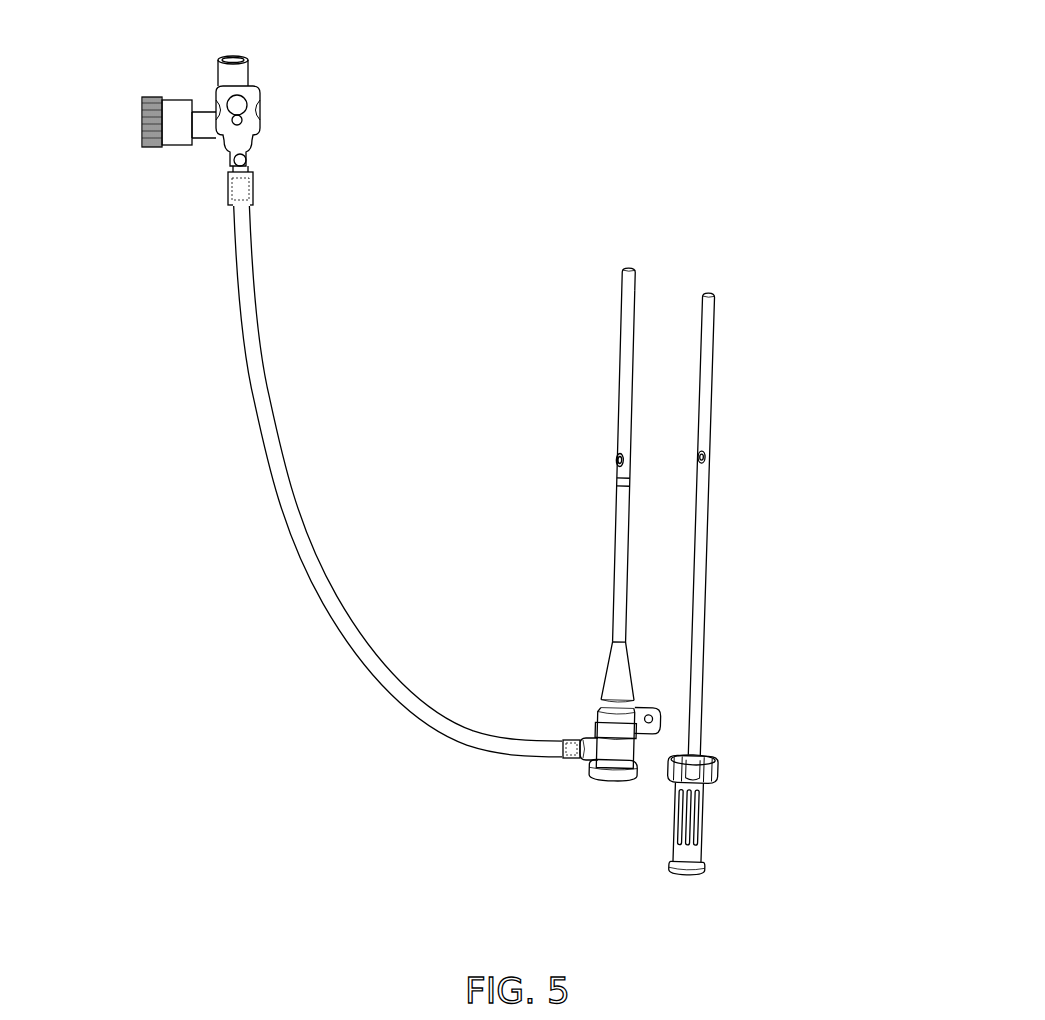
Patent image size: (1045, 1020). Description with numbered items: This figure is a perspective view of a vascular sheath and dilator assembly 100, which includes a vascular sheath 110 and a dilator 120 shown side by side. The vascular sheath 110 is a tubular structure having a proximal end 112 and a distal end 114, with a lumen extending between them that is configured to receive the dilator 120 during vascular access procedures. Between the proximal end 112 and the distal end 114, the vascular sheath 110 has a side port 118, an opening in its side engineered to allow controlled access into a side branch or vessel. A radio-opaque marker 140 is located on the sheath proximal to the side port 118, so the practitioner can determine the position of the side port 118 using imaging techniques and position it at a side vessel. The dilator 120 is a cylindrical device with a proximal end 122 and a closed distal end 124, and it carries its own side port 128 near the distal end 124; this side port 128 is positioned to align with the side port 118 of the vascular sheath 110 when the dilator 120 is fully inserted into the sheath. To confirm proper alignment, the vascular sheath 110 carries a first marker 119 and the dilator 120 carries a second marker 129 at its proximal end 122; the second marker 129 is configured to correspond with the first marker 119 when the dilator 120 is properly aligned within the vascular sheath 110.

The vascular sheath and dilator assembly 100 is at (615, 55).
The vascular sheath 110 is at (612, 533).
The proximal end 112 is at (597, 779).
The distal end 114 is at (616, 271).
The side port 118 is at (614, 457).
The first marker 119 is at (590, 773).
The dilator 120 is at (707, 563).
The proximal end 122 is at (706, 871).
The distal end 124 is at (714, 390).
The side port 128 is at (711, 457).
The second marker 129 is at (670, 777).
The radio-opaque marker 140 is at (612, 482).